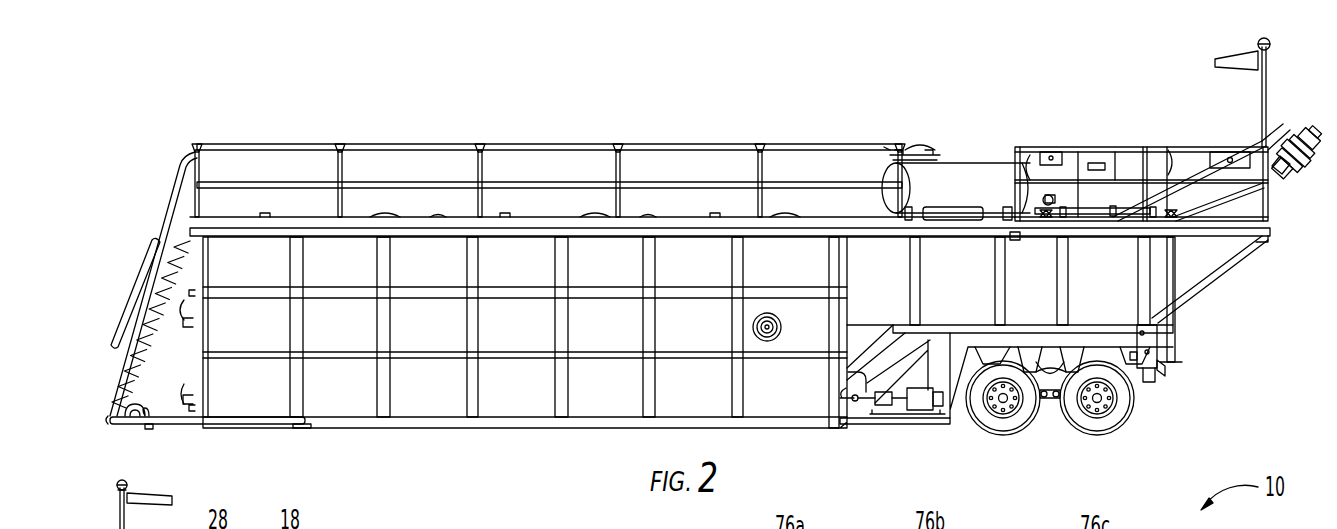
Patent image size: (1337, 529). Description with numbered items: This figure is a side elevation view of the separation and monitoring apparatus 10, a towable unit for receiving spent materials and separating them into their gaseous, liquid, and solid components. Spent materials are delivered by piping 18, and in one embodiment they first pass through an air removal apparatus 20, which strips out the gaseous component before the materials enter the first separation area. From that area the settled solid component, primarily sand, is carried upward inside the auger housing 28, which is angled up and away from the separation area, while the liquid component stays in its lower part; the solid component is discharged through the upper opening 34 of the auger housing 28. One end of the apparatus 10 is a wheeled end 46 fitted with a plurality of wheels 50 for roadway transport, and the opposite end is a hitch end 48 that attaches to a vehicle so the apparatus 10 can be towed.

The separation and monitoring apparatus 10 is at (663, 101).
The piping 18 is at (1122, 208).
The air removal apparatus 20 is at (963, 172).
The auger housing 28 is at (1205, 173).
The upper opening 34 is at (1195, 192).
The wheeled end 46 is at (1150, 343).
The hitch end 48 is at (110, 418).
The wheels 50 is at (1010, 434).